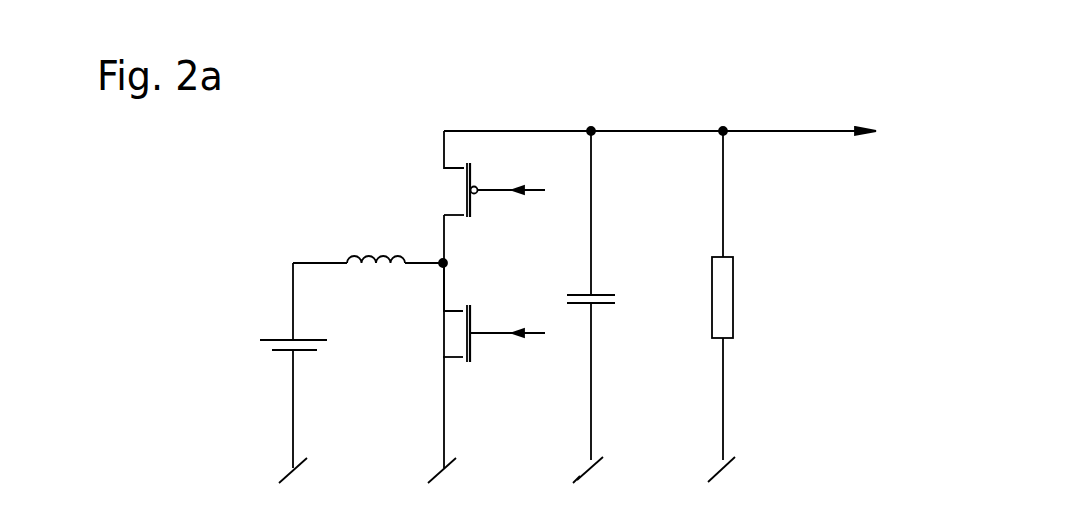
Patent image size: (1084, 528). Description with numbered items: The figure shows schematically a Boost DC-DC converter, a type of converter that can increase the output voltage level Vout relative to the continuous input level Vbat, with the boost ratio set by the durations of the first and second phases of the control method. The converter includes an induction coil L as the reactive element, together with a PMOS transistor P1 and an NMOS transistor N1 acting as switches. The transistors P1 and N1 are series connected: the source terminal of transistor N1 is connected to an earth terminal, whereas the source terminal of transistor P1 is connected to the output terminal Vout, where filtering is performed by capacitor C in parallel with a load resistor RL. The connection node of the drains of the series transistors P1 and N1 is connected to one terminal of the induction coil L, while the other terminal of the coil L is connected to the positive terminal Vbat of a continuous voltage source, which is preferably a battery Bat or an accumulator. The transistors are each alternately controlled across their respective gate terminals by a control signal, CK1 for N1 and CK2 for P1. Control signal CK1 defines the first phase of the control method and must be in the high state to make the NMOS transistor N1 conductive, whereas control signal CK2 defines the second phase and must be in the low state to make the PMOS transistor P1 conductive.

The PMOS transistor P1 is at (450, 190).
The NMOS transistor N1 is at (447, 333).
The control signal CK1 is at (508, 321).
The control signal CK2 is at (511, 178).
The induction coil L is at (376, 243).
The capacitor C is at (592, 281).
The load resistor RL is at (744, 297).
The battery Bat is at (286, 361).
The positive terminal of continuous voltage source Vbat is at (311, 245).
The output terminal Vout is at (883, 114).